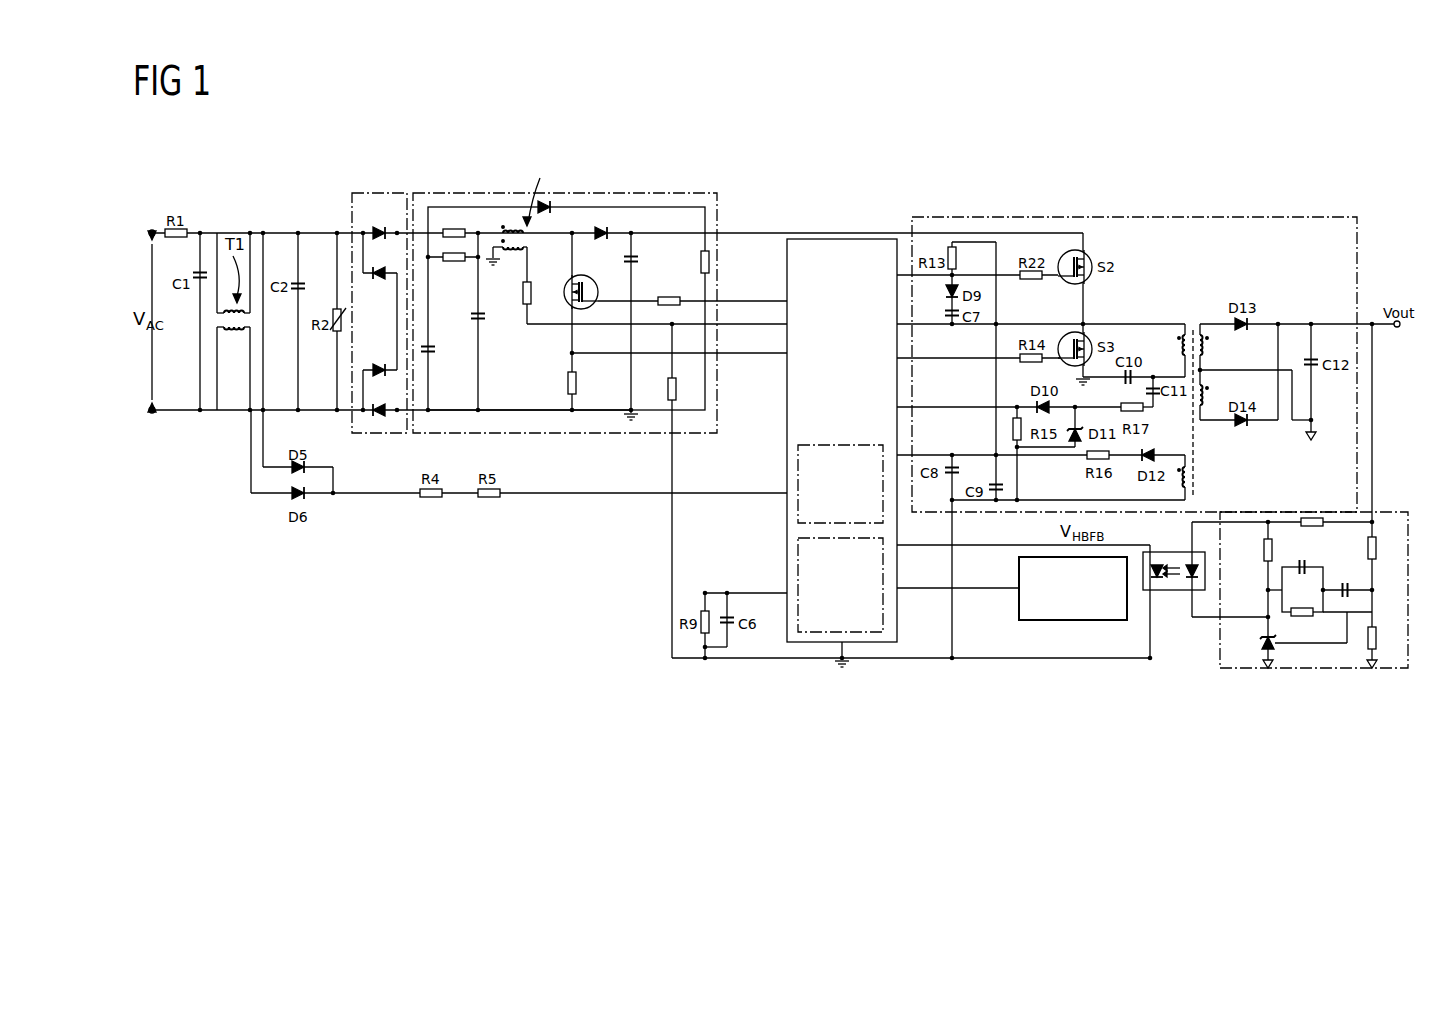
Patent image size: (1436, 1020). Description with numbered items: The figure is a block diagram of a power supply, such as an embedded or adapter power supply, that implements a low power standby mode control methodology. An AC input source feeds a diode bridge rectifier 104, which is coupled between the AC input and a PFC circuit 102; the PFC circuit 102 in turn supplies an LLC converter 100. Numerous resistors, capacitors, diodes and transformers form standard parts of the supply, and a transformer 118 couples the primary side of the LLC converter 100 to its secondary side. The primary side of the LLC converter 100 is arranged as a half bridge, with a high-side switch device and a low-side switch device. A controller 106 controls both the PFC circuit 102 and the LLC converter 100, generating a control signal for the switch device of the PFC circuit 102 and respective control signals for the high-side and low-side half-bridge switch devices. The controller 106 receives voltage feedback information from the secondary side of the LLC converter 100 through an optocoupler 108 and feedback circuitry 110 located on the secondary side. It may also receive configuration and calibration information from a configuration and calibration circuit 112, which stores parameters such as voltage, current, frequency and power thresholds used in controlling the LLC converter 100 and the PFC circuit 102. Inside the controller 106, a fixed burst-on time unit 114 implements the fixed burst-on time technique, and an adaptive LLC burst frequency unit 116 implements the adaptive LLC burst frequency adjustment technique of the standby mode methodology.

The LLC converter 100 is at (1305, 216).
The PFC circuit 102 is at (645, 193).
The diode bridge rectifier 104 is at (388, 193).
The controller 106 is at (851, 444).
The optocoupler 108 is at (1166, 590).
The feedback circuitry 110 is at (1392, 512).
The configuration and calibration circuit 112 is at (1076, 620).
The fixed burst-on time unit 114 is at (839, 445).
The adaptive LLC burst frequency unit 116 is at (870, 632).
The transformer T3 118 is at (1196, 318).